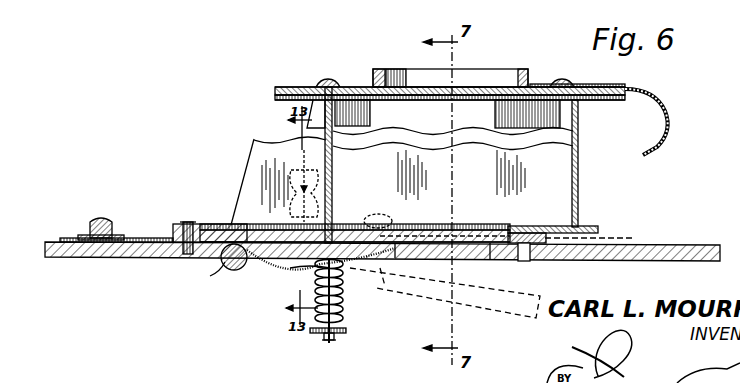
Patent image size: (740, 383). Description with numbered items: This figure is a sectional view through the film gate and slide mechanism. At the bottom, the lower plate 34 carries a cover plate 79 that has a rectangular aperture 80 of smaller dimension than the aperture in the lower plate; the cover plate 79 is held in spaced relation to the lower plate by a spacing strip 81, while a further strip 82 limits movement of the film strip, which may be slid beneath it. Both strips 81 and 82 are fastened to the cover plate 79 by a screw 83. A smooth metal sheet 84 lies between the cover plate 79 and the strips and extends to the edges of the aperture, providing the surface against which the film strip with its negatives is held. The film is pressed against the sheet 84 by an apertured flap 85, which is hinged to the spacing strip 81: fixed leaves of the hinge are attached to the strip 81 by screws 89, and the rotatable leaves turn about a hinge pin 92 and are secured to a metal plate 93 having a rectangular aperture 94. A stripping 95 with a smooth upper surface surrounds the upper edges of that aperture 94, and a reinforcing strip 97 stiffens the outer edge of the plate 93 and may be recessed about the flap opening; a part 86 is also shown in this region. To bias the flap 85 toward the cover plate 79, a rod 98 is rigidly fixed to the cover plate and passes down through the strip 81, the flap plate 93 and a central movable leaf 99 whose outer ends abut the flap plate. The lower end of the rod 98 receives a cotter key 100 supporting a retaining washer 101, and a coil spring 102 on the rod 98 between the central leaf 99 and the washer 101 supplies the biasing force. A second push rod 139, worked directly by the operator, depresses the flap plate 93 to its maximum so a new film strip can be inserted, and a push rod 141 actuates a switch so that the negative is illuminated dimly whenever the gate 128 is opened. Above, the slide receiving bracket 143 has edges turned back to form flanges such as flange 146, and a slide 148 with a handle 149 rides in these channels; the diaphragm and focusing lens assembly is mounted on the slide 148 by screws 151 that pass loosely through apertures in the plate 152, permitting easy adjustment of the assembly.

The lower plate 34 is at (628, 260).
The cover plate 79 is at (578, 228).
The rectangular aperture 80 is at (464, 230).
The spacing strip 81 is at (176, 232).
The strip 82 is at (590, 229).
The screw 83 is at (200, 228).
The sheet 84 is at (400, 230).
The apertured flap 85 is at (516, 260).
The link 86 is at (230, 270).
The screws 89 is at (262, 264).
The hinge pin 92 is at (223, 262).
The metal plate 93 is at (402, 260).
The rectangular aperture 94 is at (489, 248).
The stripping 95 is at (512, 238).
The reinforcing strip 97 is at (518, 260).
The rod 98 is at (322, 342).
The central movable leaf 99 is at (298, 269).
The cotter key 100 is at (336, 337).
The retaining washer 101 is at (348, 331).
The coil spring 102 is at (340, 300).
The gate 128 is at (578, 156).
The second push rod 139 is at (262, 178).
The push rod 141 is at (460, 88).
The slide receiving bracket 143 is at (272, 100).
The flange 146 is at (275, 88).
The slide 148 is at (336, 88).
The handle 149 is at (668, 124).
The screws 151 is at (318, 86).
The plate 152 is at (612, 88).